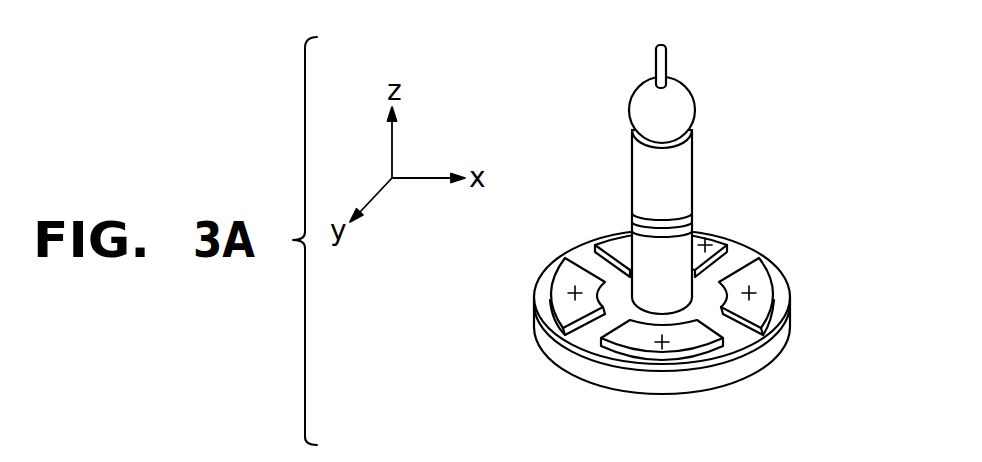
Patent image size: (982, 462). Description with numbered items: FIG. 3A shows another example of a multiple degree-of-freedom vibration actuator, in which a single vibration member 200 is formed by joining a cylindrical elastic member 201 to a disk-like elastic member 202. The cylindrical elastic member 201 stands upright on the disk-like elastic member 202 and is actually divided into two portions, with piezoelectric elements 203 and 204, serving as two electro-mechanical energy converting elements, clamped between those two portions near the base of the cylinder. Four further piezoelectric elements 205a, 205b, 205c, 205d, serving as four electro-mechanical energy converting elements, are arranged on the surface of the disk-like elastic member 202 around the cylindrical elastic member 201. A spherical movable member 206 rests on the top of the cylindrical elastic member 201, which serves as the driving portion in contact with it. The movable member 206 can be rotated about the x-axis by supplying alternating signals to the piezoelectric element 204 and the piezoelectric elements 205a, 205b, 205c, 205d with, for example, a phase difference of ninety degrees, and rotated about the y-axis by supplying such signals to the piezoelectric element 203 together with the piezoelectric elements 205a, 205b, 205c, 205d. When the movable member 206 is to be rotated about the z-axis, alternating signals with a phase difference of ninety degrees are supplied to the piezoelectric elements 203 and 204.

The vibration member 200 is at (784, 64).
The cylindrical elastic member 201 is at (692, 153).
The disk-like elastic member 202 is at (750, 345).
The piezoelectric element 203 is at (635, 217).
The piezoelectric element 204 is at (630, 234).
The piezoelectric element 205a is at (553, 292).
The piezoelectric element 205b is at (677, 350).
The piezoelectric element 205c is at (772, 288).
The piezoelectric element 205d is at (712, 243).
The spherical movable member 206 is at (695, 105).